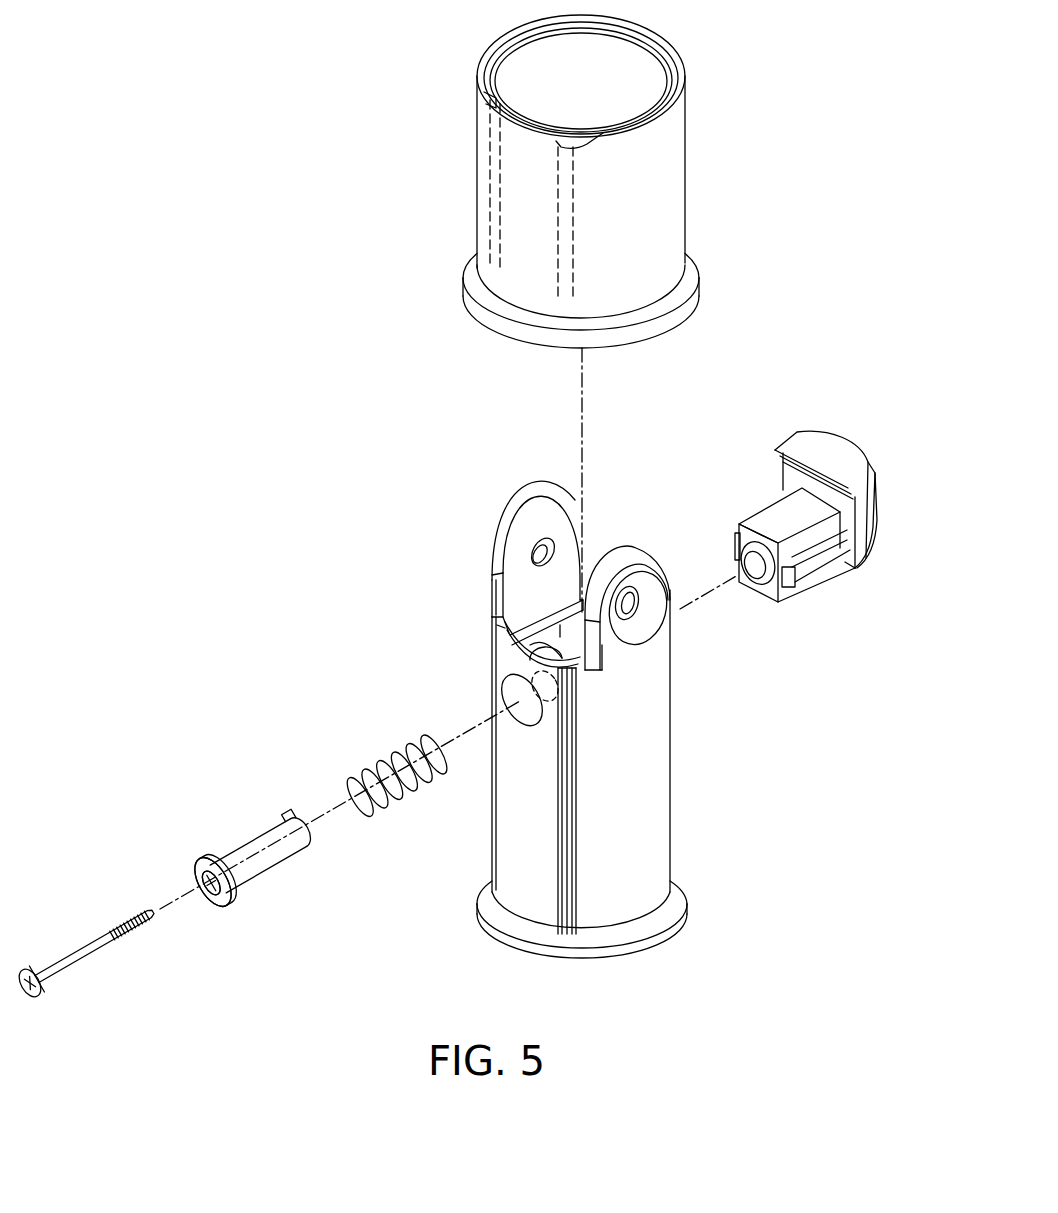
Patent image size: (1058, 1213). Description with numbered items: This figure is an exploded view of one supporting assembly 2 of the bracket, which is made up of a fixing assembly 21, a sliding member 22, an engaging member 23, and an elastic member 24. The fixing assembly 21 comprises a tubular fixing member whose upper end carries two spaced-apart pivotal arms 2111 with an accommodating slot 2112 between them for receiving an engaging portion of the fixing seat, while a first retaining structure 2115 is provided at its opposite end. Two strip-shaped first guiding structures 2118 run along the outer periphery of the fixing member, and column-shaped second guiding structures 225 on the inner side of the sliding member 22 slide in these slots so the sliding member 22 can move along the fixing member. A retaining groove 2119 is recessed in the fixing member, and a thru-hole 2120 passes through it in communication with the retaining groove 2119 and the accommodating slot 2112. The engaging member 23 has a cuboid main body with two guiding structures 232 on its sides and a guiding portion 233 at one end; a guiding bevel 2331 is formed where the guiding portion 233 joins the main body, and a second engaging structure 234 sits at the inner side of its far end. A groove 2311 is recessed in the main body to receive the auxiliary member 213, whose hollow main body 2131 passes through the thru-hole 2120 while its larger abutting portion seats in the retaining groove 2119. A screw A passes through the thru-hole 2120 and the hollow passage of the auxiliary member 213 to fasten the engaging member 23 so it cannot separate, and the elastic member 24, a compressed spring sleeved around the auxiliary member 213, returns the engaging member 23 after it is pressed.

The supporting assembly 2 is at (204, 126).
The fixing assembly 21 is at (572, 687).
The sliding member 22 is at (586, 181).
The engaging member 23 is at (806, 503).
The elastic member 24 is at (372, 763).
The second guiding structures 225 is at (558, 227).
The pivotal arms 2111 is at (520, 522).
The accommodating slot 2112 is at (598, 528).
The first retaining structure 2115 is at (670, 924).
The first guiding structures 2118 is at (574, 808).
The retaining groove 2119 is at (506, 690).
The thru-hole 2120 is at (508, 661).
The auxiliary member 213 is at (782, 588).
The main body 2131 is at (254, 835).
The guiding structures 232 is at (737, 547).
The groove 2311 is at (758, 575).
The guiding portion 233 is at (790, 482).
The second engaging structure 234 is at (855, 490).
The guiding bevel 2331 is at (868, 547).
The screw A is at (80, 955).